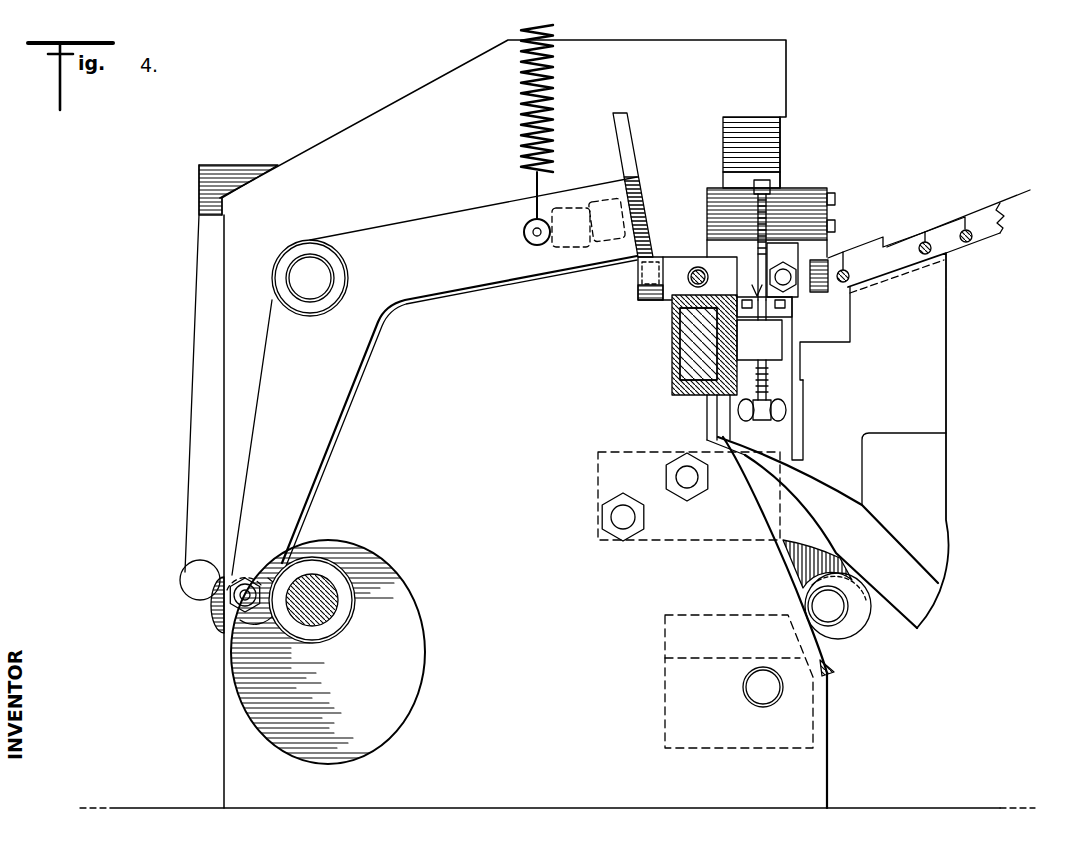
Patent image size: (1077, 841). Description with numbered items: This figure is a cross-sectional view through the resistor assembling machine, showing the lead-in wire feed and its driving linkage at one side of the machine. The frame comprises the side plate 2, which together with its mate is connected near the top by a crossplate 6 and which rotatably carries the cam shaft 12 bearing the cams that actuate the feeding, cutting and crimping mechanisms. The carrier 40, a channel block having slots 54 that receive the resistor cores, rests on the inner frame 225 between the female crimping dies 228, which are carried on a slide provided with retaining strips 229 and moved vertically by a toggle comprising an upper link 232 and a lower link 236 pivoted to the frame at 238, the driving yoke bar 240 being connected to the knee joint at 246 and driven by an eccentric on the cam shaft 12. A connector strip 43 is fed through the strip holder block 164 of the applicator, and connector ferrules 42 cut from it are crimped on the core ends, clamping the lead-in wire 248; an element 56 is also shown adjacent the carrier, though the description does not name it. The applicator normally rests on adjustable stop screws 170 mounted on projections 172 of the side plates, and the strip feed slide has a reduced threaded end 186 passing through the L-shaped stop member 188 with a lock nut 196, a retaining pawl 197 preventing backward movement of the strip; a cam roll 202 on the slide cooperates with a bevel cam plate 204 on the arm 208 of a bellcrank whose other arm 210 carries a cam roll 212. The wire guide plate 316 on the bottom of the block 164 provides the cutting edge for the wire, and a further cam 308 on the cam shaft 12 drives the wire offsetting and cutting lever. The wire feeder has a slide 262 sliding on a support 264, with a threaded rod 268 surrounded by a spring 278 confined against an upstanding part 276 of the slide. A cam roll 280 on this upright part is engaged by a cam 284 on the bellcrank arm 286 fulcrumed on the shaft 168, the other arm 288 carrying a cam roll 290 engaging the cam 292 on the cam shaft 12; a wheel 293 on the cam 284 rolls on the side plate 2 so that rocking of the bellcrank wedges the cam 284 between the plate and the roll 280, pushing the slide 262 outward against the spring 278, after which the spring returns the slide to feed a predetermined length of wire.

The left side plate 2 is at (420, 100).
The crossplate 6 is at (768, 135).
The cam shaft 12 is at (322, 610).
The carrier 40 is at (1005, 228).
The connector ferrule 42 is at (968, 240).
The connector strip 43 is at (752, 290).
The slots 54 is at (1030, 190).
The wire 56 is at (967, 228).
The strip holder block 164 is at (722, 220).
The shaft 168 is at (310, 276).
The adjustable stop screws 170 is at (787, 386).
The projections 172 is at (783, 350).
The reduced threaded end 186 is at (812, 285).
The stop member 188 is at (787, 262).
The lock nut 196 is at (798, 305).
The retaining pawl 197 is at (757, 258).
The cam roll 202 is at (848, 265).
The bevel cam plate 204 is at (825, 254).
The arm of bellcrank lever 208 is at (213, 172).
The other arm of bellcrank 210 is at (192, 422).
The cam roll 212 is at (186, 578).
The inner frame 225 is at (960, 387).
The female crimping dies 228 is at (800, 340).
The retaining strips 229 is at (707, 432).
The upper link 232 is at (788, 557).
The lower link 236 is at (833, 665).
The pivot 238 is at (757, 690).
The driving yoke bar 240 is at (858, 630).
The knee joint connection 246 is at (822, 604).
The lead-in wire 248 is at (699, 344).
The slide 262 is at (675, 395).
The support 264 is at (672, 362).
The rod 268 is at (697, 268).
The upstanding part 276 is at (660, 300).
The spring 278 is at (670, 258).
The cam roll 280 is at (634, 290).
The cam 284 is at (622, 125).
The bellcrank arm 286 is at (443, 227).
The other arm of bellcrank 288 is at (322, 408).
The cam roll 290 is at (240, 620).
The cam 292 is at (272, 728).
The wheel 293 is at (598, 202).
The cam 308 is at (216, 604).
The wire guide plate 316 is at (759, 330).